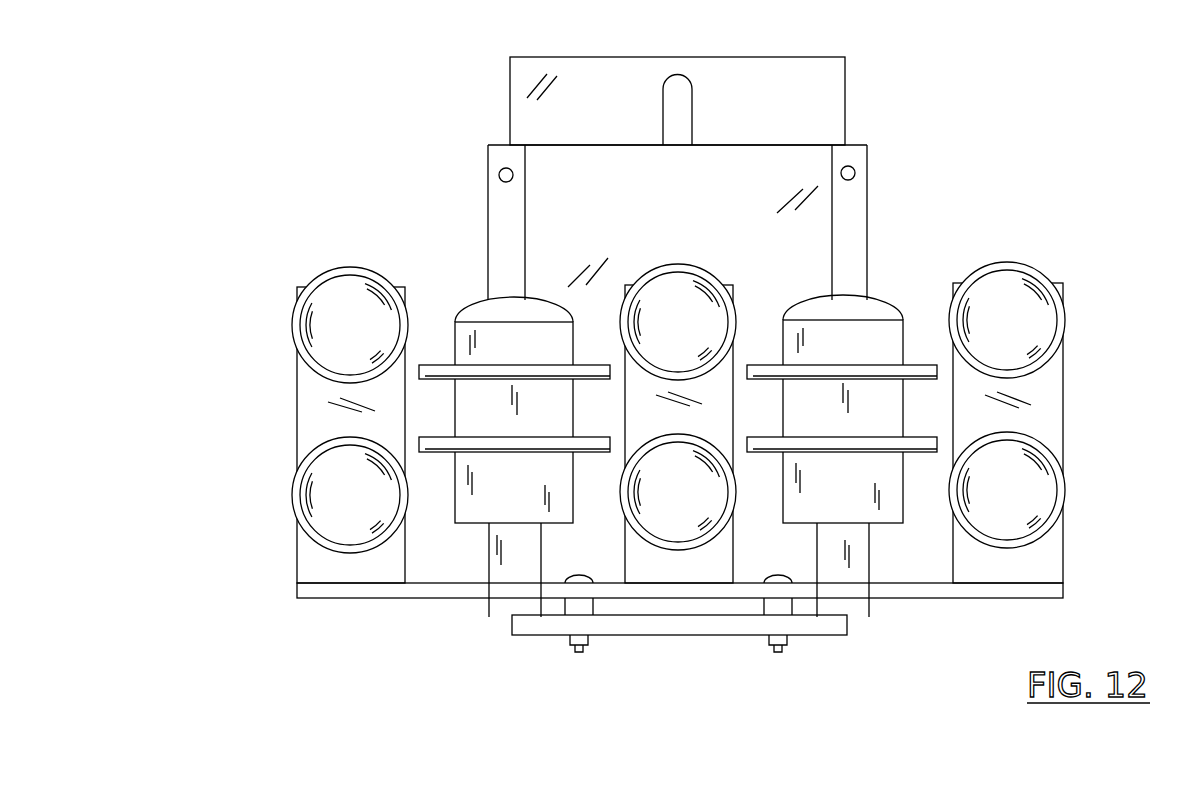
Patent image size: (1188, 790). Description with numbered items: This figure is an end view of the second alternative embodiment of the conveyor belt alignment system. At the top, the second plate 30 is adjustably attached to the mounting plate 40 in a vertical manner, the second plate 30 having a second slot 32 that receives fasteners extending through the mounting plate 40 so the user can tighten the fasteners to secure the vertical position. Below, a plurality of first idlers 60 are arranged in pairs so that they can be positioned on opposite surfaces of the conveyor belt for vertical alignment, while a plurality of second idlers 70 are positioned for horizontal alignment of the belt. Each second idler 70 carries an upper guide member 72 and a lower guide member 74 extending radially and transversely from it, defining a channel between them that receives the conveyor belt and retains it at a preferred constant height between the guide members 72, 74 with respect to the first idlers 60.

The second plate 30 is at (830, 97).
The second slot 32 is at (677, 90).
The mounting plate 40 is at (503, 155).
The first idlers 60 is at (300, 487).
The second idlers 70 is at (476, 310).
The upper guide member 72 is at (428, 365).
The lower guide member 74 is at (425, 452).